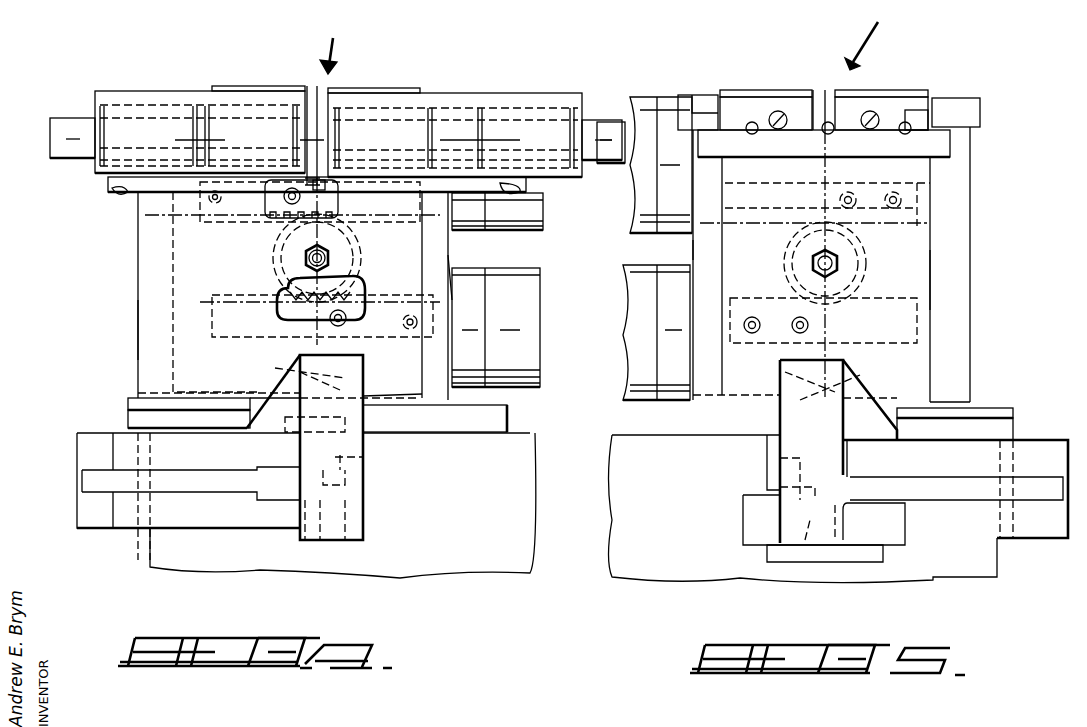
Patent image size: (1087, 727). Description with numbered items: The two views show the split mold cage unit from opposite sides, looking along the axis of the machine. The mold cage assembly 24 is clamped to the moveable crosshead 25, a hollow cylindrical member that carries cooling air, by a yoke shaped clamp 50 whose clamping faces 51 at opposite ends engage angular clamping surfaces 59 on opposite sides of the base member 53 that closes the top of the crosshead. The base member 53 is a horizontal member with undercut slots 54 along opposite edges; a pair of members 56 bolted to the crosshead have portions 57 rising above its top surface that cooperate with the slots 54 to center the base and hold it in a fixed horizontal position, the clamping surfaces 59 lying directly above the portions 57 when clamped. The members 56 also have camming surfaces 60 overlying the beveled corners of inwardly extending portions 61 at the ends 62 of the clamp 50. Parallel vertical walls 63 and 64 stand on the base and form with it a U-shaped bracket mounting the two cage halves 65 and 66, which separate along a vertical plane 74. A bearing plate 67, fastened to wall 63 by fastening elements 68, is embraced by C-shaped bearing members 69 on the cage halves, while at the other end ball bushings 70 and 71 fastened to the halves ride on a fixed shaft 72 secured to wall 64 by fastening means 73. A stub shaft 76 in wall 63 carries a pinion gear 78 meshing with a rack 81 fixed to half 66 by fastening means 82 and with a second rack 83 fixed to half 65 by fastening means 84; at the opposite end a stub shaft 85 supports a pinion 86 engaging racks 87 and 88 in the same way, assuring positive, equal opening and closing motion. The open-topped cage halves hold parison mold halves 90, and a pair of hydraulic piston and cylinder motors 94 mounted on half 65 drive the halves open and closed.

In FIG. 4, the mold cage assembly 24 is at (318, 49).
In FIG. 5, the mold cage assembly 24 is at (871, 40).
In FIG. 4, the moveable crosshead 25 is at (450, 560).
In FIG. 5, the moveable crosshead 25 is at (668, 560).
In FIG. 4, the yoke shaped clamp 50 is at (85, 452).
In FIG. 5, the yoke shaped clamp 50 is at (1048, 540).
In FIG. 4, the clamping faces 51 is at (340, 372).
In FIG. 5, the clamping faces 51 is at (850, 385).
In FIG. 4, the base member 53 is at (140, 400).
In FIG. 5, the base member 53 is at (1000, 410).
In FIG. 4, the undercut slots 54 is at (138, 418).
In FIG. 5, the undercut slots 54 is at (1000, 428).
In FIG. 4, the members 56 is at (345, 456).
In FIG. 5, the members 56 is at (775, 457).
In FIG. 4, the portions 57 is at (320, 418).
In FIG. 5, the portions 57 is at (780, 418).
In FIG. 4, the angular clamping surfaces 59 is at (290, 365).
In FIG. 5, the angular clamping surfaces 59 is at (782, 372).
In FIG. 4, the camming surfaces 60 is at (305, 540).
In FIG. 5, the camming surfaces 60 is at (835, 545).
In FIG. 4, the inwardly extending portions 61 is at (345, 540).
In FIG. 5, the inwardly extending portions 61 is at (800, 530).
In FIG. 4, the ends 62 is at (345, 470).
In FIG. 5, the ends 62 is at (785, 475).
In FIG. 5, the vertical upstanding wall 63 is at (955, 278).
In FIG. 4, the vertical upstanding wall 64 is at (150, 340).
In FIG. 4, the mold cage half 65 is at (695, 248).
In FIG. 5, the mold cage half 65 is at (695, 248).
In FIG. 4, the mold cage half 66 is at (172, 272).
In FIG. 5, the mold cage half 66 is at (975, 242).
In FIG. 5, the bearing plate 67 is at (935, 150).
In FIG. 5, the fastening elements 68 is at (750, 125).
In FIG. 5, the C-shaped bearing members 69 is at (735, 112).
In FIG. 4, the ball bushing 70 is at (525, 97).
In FIG. 4, the ball bushing 71 is at (170, 95).
In FIG. 4, the fixed shaft 72 is at (75, 112).
In FIG. 4, the fastening means 73 is at (112, 190).
In FIG. 4, the vertical plane 74 is at (322, 92).
In FIG. 5, the vertical plane 74 is at (828, 93).
In FIG. 5, the stub shaft 76 is at (812, 258).
In FIG. 5, the pinion gear 78 is at (848, 266).
In FIG. 5, the rack 81 is at (925, 210).
In FIG. 5, the fastening means 82 is at (860, 195).
In FIG. 5, the second rack 83 is at (925, 320).
In FIG. 5, the fastening means 84 is at (797, 318).
In FIG. 4, the stub shaft 85 is at (305, 262).
In FIG. 4, the pinion 86 is at (272, 250).
In FIG. 4, the rack 87 is at (212, 318).
In FIG. 4, the rack 88 is at (200, 210).
In FIG. 4, the parison mold halves 90 is at (268, 87).
In FIG. 5, the parison mold halves 90 is at (815, 92).
In FIG. 4, the hydraulic piston and cylinder motors 94 is at (540, 215).
In FIG. 5, the hydraulic piston and cylinder motors 94 is at (640, 313).